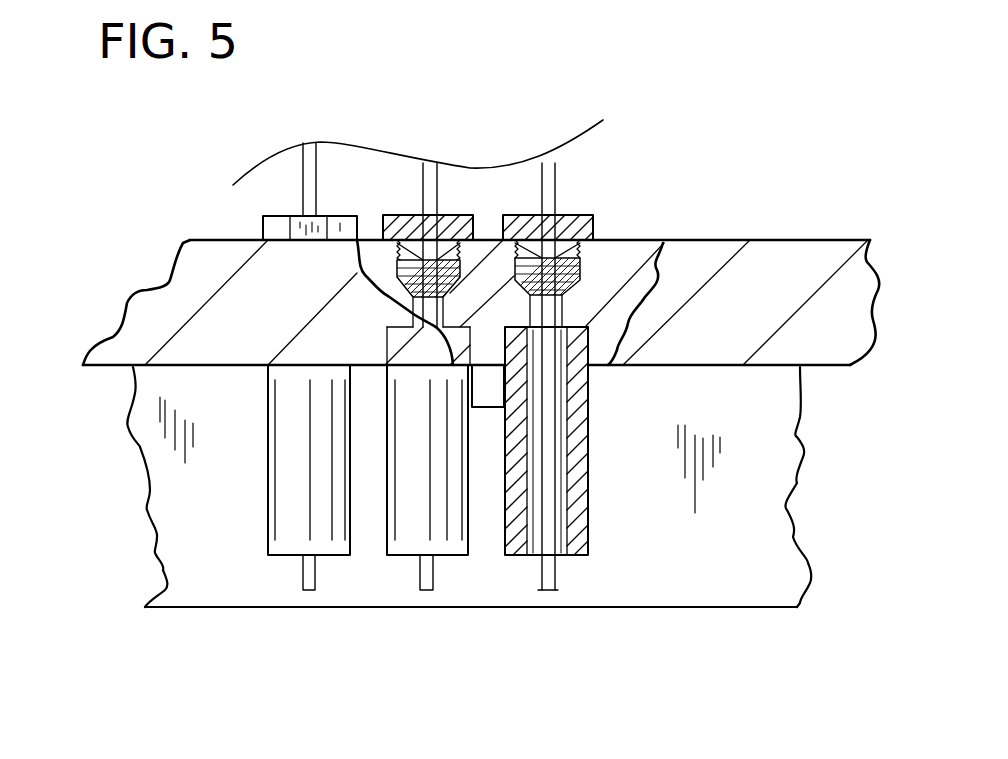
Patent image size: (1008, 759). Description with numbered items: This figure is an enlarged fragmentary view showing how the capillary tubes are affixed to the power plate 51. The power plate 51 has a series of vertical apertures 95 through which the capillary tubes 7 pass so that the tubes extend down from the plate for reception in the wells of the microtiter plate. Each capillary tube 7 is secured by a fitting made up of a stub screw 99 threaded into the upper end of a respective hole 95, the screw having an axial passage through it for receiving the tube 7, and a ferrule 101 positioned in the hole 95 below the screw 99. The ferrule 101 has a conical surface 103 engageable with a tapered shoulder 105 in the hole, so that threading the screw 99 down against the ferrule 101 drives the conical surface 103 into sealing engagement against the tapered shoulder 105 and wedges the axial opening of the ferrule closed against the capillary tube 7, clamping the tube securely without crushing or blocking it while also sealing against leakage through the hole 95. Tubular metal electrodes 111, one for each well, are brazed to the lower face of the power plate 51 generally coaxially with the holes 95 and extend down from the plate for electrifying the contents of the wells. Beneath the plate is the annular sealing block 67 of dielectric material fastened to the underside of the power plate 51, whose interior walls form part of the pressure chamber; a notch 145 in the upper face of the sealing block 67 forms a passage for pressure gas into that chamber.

The capillary tube 7 is at (315, 165).
The power plate 51 is at (817, 242).
The sealing block 67 is at (190, 565).
The vertical aperture 95 is at (565, 310).
The stub screw 99 is at (568, 215).
The ferrule 101 is at (582, 262).
The conical surface 103 is at (452, 280).
The tapered shoulder 105 is at (448, 293).
The tubular metal electrode 111 is at (268, 495).
The notch 145 is at (480, 407).